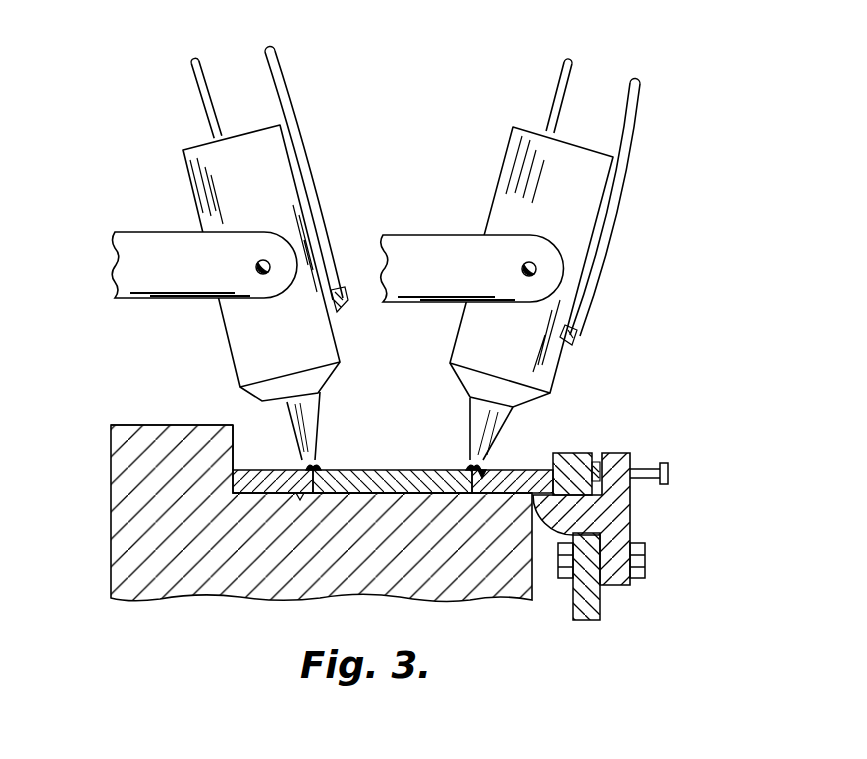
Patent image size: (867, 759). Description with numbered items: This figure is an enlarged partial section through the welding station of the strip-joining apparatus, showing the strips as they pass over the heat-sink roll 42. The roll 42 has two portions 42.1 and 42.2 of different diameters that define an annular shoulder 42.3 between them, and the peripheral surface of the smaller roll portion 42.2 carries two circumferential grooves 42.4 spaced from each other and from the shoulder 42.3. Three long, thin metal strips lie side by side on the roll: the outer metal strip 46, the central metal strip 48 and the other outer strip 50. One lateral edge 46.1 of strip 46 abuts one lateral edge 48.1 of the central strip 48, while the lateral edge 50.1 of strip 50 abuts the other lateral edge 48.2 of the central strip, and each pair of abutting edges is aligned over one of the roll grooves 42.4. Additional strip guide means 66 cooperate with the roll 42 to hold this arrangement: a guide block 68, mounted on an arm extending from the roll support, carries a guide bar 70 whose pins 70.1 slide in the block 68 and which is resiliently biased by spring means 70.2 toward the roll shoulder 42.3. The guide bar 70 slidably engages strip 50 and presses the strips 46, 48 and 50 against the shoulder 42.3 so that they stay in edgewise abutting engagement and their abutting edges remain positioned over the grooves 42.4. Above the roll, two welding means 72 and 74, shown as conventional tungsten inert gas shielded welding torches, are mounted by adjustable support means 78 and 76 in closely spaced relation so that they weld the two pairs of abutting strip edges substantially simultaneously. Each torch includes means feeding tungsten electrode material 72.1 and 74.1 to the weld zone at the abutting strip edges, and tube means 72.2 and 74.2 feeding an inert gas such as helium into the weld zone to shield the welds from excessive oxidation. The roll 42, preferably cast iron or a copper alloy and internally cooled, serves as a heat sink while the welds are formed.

The heat-sink roll 42 is at (104, 458).
The roll portion 42.1 is at (196, 424).
The roll portion 42.2 is at (264, 494).
The annular shoulder 42.3 is at (253, 423).
The circumferential grooves 42.4 is at (320, 497).
The metal strip 46 is at (272, 476).
The lateral edge 46.1 is at (297, 495).
The central metal strip 48 is at (391, 471).
The lateral edge 48.1 is at (321, 468).
The lateral edge 48.2 is at (466, 472).
The metal strip 50 is at (513, 496).
The lateral edge 50.1 is at (484, 470).
The strip guide means 66 is at (640, 456).
The guide block 68 is at (617, 510).
The guide bar 70 is at (567, 458).
The pins 70.1 is at (674, 469).
The spring means 70.2 is at (598, 466).
The welding means 72 is at (585, 186).
The tungsten electrode material 72.1 is at (567, 92).
The tube means 72.2 is at (638, 108).
The welding means 74 is at (288, 174).
The tungsten electrode material 74.1 is at (215, 101).
The tube means 74.2 is at (292, 96).
The support means 76 is at (152, 250).
The support means 78 is at (452, 252).